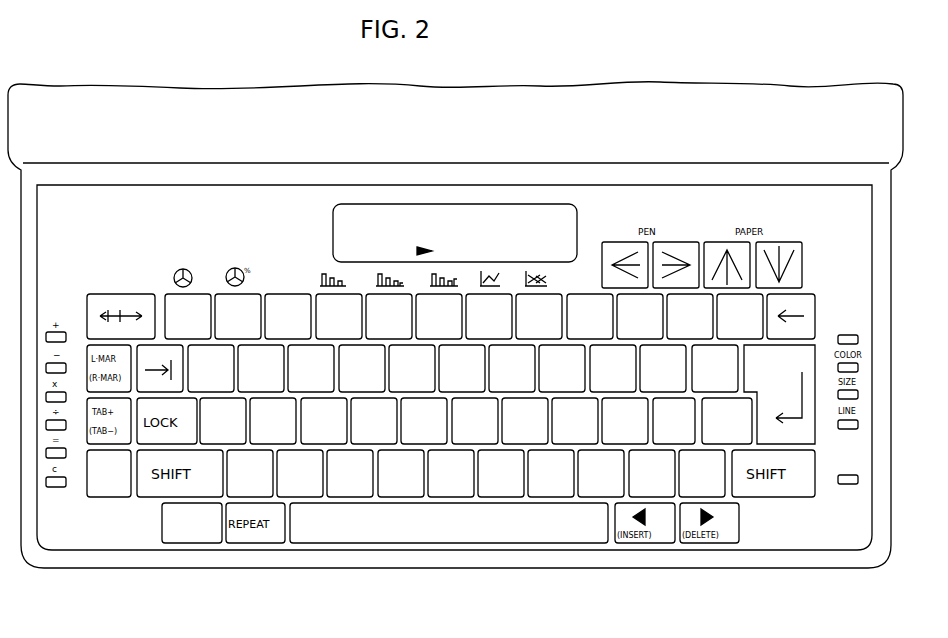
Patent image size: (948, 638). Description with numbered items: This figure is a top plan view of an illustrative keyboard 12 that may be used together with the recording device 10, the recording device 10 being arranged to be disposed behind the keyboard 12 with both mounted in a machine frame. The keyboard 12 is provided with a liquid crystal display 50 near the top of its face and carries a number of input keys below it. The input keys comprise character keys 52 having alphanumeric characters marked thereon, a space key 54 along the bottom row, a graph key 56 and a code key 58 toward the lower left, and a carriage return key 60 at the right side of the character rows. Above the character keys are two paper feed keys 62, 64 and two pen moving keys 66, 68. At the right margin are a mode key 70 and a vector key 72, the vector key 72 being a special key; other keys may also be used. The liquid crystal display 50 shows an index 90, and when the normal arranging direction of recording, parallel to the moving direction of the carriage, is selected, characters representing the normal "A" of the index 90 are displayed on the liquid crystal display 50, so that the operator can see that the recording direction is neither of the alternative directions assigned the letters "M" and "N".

The recording device 10 is at (870, 126).
The keyboard 12 is at (333, 583).
The liquid crystal display 50 is at (418, 212).
The character keys 52 is at (506, 508).
The space key 54 is at (451, 530).
The graph key 56 is at (207, 535).
The code key 58 is at (112, 492).
The carriage return key 60 is at (803, 430).
The paper feed key 62 is at (718, 249).
The paper feed key 64 is at (790, 246).
The pen moving key 66 is at (622, 248).
The pen moving key 68 is at (680, 247).
The mode key 70 is at (858, 480).
The vector key 72 is at (860, 339).
The index 90 is at (416, 251).